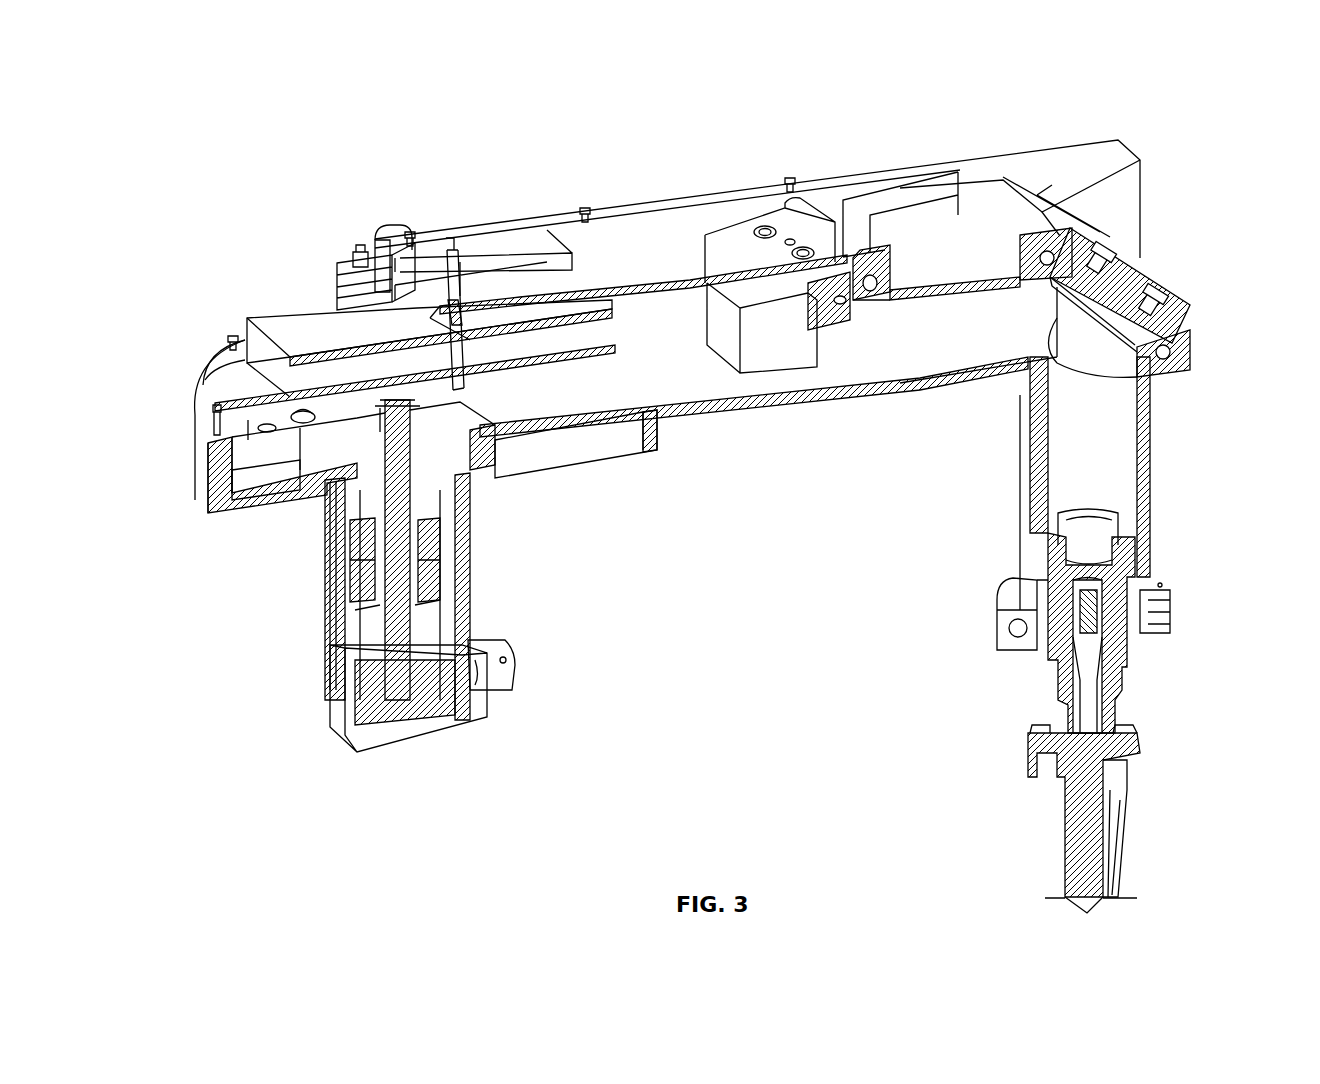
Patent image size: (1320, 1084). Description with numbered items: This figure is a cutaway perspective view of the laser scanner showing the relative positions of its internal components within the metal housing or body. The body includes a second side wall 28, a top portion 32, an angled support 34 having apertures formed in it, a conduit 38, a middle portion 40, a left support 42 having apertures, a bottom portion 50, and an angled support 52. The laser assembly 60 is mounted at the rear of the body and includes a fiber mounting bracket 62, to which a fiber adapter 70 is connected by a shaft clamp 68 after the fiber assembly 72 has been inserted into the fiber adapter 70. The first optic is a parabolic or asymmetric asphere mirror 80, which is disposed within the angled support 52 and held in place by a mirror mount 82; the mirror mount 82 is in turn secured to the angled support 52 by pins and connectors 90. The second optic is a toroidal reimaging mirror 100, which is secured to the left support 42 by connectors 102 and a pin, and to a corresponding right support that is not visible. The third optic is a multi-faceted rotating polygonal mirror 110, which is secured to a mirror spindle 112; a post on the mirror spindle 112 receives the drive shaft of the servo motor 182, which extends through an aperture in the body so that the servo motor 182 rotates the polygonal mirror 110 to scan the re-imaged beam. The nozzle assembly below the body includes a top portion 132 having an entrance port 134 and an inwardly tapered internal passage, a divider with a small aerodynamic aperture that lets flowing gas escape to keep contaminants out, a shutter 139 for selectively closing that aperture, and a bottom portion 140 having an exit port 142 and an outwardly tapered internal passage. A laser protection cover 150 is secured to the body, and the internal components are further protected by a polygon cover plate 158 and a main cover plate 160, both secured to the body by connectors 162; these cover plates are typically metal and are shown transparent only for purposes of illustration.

The second side wall 28 is at (671, 322).
The top portion 32 is at (1146, 168).
The angled support 34 is at (1035, 190).
The conduit 38 is at (929, 350).
The middle portion 40 is at (748, 418).
The left support 42 is at (786, 352).
The bottom portion 50 is at (208, 508).
The angled support 52 is at (243, 480).
The laser assembly 60 is at (982, 612).
The fiber mounting bracket 62 is at (1158, 450).
The shaft clamp 68 is at (1172, 605).
The fiber adapter 70 is at (1130, 553).
The fiber assembly 72 is at (1140, 742).
The asymmetric asphere mirror 80 is at (1170, 340).
The mirror mount 82 is at (1180, 315).
The connectors 90 is at (1155, 285).
The toroidal reimaging mirror 100 is at (740, 235).
The connectors 102 is at (820, 255).
The multi-faceted rotating polygonal mirror 110 is at (320, 470).
The mirror spindle 112 is at (340, 463).
The top portion 132 is at (540, 285).
The entrance port 134 is at (618, 308).
The shutter 139 is at (345, 263).
The bottom portion 140 is at (303, 320).
The exit port 142 is at (235, 342).
The laser protection cover 150 is at (468, 245).
The polygon cover plate 158 is at (205, 385).
The main cover plate 160 is at (660, 248).
The connectors 162 is at (410, 232).
The servo motor 182 is at (330, 727).